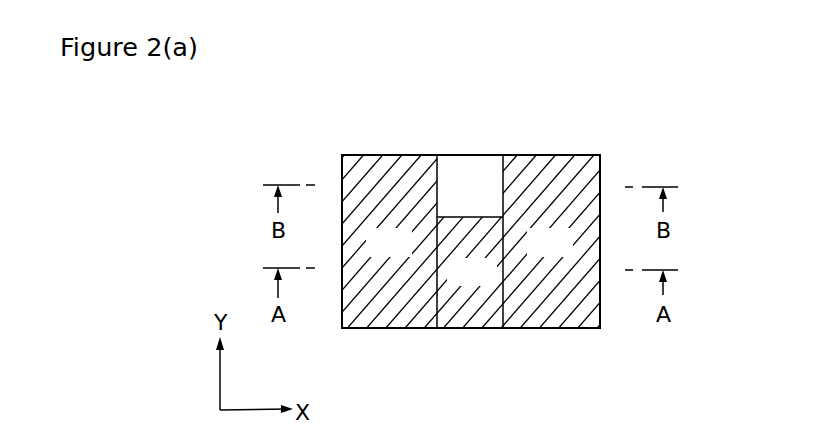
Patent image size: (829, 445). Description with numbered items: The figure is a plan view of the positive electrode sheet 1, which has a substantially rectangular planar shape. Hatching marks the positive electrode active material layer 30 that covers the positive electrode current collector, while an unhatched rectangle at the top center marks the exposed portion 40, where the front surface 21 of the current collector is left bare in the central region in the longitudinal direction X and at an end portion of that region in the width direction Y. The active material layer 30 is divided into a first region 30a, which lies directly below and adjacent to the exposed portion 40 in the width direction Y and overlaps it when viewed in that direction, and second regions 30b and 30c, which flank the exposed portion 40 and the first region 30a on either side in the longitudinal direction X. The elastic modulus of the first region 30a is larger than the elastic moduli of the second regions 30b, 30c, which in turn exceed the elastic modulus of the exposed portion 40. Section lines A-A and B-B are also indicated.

The positive electrode sheet 1 is at (607, 125).
The front surface 21 is at (475, 160).
The positive electrode active material layer 30 is at (527, 336).
The first region 30a is at (485, 328).
The second region 30b is at (362, 168).
The second region 30c is at (600, 303).
The exposed portion 40 is at (458, 160).